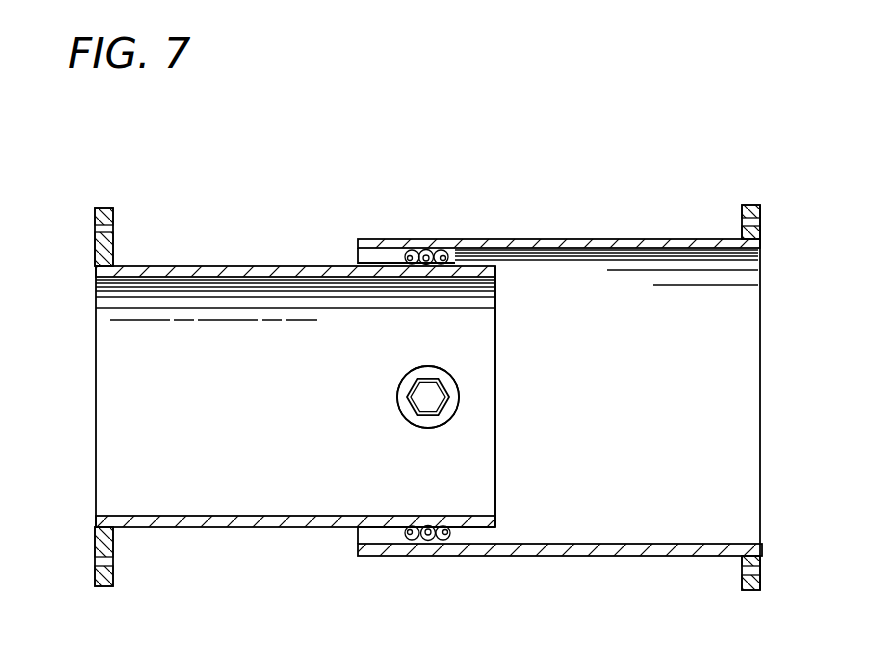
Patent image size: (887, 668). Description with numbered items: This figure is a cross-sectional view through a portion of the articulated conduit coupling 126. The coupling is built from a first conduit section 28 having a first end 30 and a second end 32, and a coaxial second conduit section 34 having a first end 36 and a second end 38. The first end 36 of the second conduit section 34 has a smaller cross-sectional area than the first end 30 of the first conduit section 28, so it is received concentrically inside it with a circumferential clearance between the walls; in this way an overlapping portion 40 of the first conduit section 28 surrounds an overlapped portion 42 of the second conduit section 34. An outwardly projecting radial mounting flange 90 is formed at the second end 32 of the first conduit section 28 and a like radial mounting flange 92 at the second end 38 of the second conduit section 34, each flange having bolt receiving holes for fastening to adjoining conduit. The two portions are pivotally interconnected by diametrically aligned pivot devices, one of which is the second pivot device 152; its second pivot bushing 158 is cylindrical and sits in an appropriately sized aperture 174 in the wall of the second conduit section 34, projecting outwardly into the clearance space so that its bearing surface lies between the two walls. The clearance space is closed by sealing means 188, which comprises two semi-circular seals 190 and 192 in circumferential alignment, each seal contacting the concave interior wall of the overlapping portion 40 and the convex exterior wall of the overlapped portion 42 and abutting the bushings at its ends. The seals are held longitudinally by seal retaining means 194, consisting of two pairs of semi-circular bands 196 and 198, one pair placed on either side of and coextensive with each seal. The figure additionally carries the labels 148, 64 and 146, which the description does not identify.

The articulated conduit coupling 126 is at (705, 102).
The radial mounting flange 92 is at (104, 208).
The second conduit section 34 is at (205, 266).
The ball 148 is at (410, 250).
The semi-circular seal 192 is at (426, 250).
The sealing means 188 is at (437, 225).
The semi-circular band 196 is at (446, 250).
The seal retaining means 194 is at (470, 238).
The first conduit section 28 is at (614, 239).
The radial mounting flange 90 is at (750, 205).
The first end 30 is at (357, 253).
The first end 36 is at (497, 298).
The second end 38 is at (96, 336).
The second end 32 is at (762, 327).
The aperture 174 is at (434, 372).
The second pivot bushing 158 is at (408, 382).
The second pivot device 152 is at (390, 411).
The bolt 64 is at (428, 398).
The overlapped portion 42 is at (470, 516).
The overlapping portion 40 is at (346, 569).
The semi-circular band 198 is at (412, 540).
The semi-circular seal 190 is at (428, 541).
The ball 146 is at (446, 540).